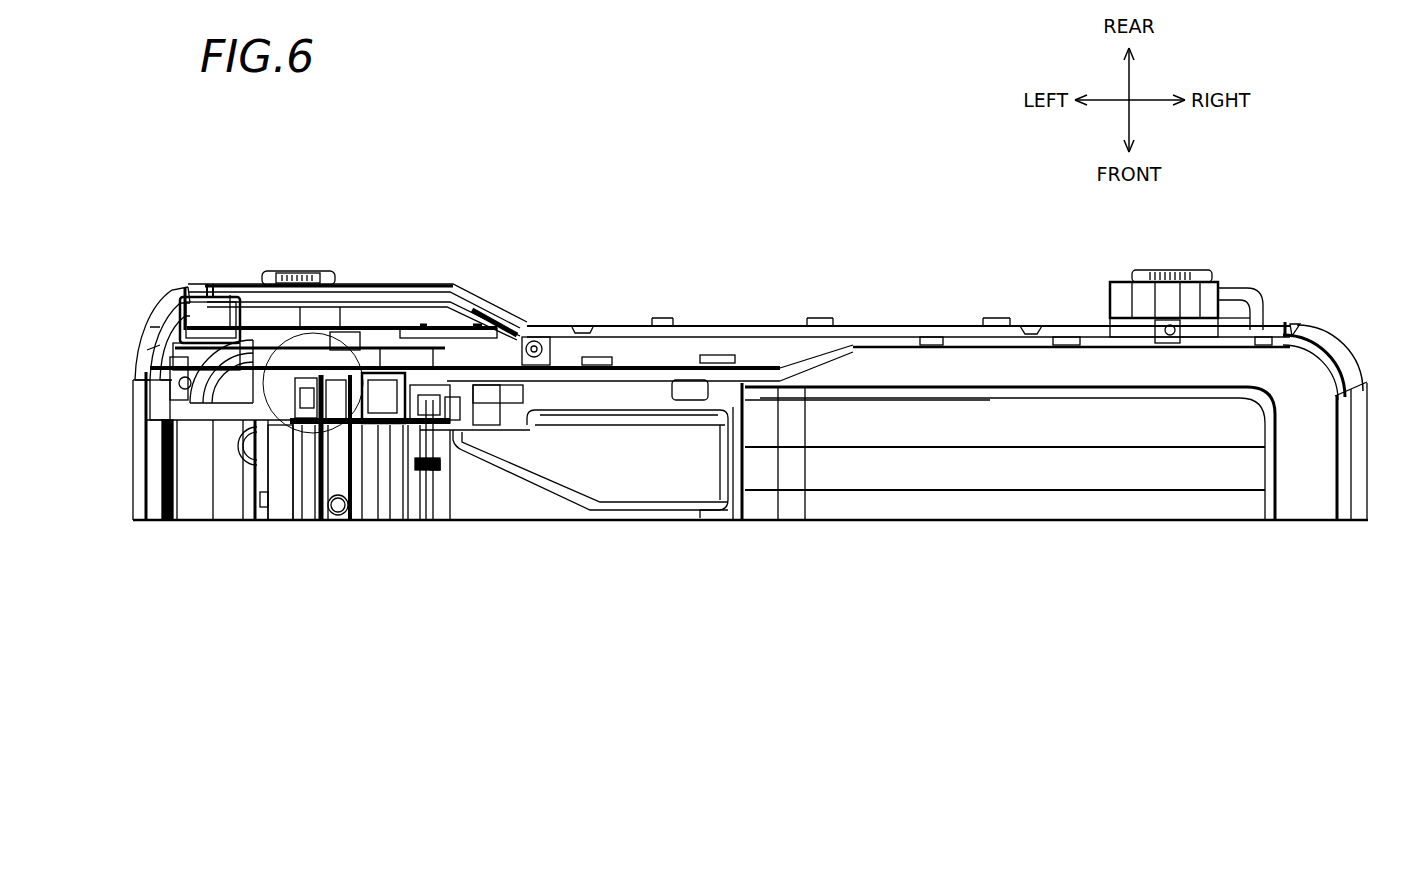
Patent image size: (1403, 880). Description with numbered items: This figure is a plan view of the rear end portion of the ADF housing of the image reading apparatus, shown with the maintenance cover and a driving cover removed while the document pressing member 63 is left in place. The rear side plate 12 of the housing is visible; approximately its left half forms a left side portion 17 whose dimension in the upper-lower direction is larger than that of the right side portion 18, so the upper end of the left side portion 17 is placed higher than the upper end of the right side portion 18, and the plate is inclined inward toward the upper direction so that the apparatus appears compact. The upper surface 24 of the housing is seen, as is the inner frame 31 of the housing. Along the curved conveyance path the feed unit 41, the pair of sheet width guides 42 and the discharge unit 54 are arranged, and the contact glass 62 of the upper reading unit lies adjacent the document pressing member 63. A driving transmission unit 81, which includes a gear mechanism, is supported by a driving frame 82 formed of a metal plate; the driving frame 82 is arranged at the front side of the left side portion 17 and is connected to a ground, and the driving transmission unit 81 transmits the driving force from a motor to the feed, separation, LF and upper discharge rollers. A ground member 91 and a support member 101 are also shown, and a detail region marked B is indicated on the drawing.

The connector portion B is at (312, 316).
The rear side plate 12 is at (455, 280).
The left side portion 17 is at (343, 290).
The right side portion 18 is at (918, 325).
The upper surface 24 is at (1310, 380).
The inner frame 31 is at (332, 487).
The feed unit 41 is at (505, 508).
The pair of sheet width guides 42 is at (670, 450).
The discharge unit 54 is at (1038, 425).
The contact glass 62 is at (260, 477).
The document pressing member 63 is at (280, 505).
The driving transmission unit 81 is at (418, 324).
The driving frame 82 is at (401, 300).
The ground member 91 is at (318, 478).
The support member 101 is at (350, 405).